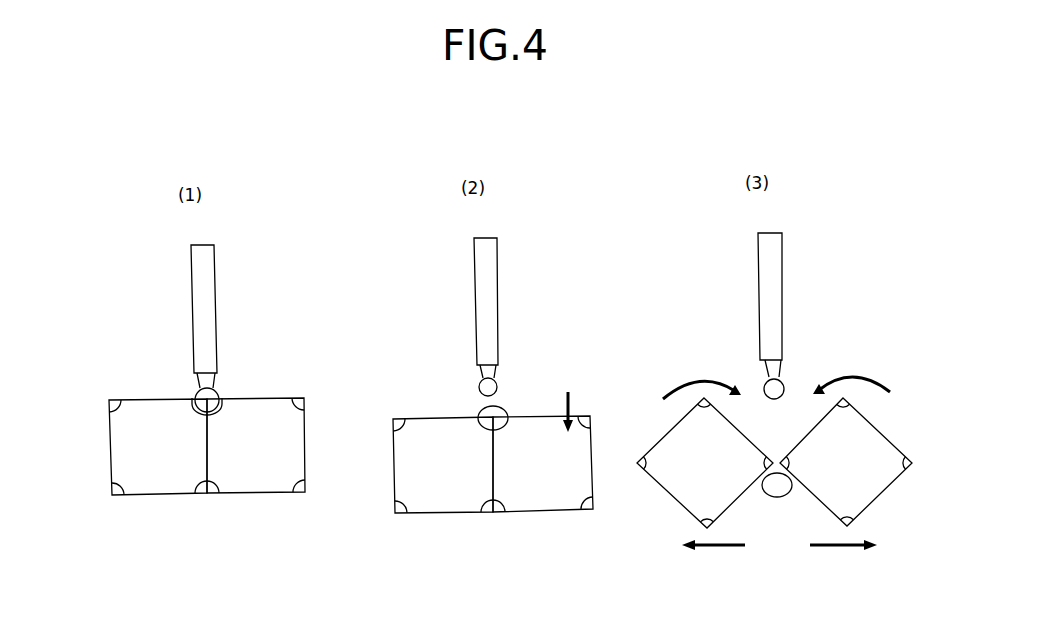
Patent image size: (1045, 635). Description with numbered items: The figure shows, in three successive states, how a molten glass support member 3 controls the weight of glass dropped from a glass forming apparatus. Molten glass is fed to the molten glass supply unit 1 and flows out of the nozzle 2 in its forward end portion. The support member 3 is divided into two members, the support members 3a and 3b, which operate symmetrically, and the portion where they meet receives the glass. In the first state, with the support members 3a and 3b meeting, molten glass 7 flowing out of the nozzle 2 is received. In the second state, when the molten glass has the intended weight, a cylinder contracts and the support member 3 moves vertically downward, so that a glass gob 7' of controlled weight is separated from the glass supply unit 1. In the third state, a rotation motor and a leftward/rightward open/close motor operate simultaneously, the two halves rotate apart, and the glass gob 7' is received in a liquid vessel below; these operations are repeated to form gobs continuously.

The molten glass supply unit 1 is at (216, 280).
The nozzle 2 is at (195, 378).
The molten glass support member 3 is at (492, 432).
The support member 3a is at (127, 460).
The support member 3b is at (293, 455).
The molten glass 7 is at (228, 379).
The glass gob 7' is at (639, 437).